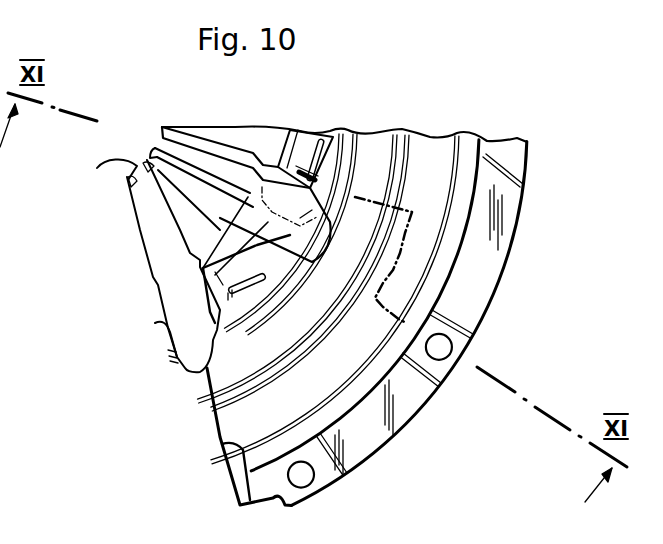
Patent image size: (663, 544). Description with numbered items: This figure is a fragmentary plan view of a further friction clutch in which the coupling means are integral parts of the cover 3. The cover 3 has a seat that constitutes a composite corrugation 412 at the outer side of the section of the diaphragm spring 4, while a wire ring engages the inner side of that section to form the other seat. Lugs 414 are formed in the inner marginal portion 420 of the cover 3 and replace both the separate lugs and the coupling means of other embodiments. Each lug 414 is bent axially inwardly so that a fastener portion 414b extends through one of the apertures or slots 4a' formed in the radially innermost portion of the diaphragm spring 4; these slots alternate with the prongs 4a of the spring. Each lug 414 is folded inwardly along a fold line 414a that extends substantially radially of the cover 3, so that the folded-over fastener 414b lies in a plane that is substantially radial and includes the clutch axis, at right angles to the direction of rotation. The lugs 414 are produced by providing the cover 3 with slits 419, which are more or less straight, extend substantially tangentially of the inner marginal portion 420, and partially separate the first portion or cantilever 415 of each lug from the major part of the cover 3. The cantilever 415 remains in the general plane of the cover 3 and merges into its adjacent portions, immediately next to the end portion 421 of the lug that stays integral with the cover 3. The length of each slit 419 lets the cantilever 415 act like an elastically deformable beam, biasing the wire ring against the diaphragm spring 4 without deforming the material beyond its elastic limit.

The cover 3 is at (392, 298).
The diaphragm spring 4 is at (207, 133).
The prongs 4a is at (147, 265).
The apertures or slots 4a' is at (210, 153).
The lugs 414 is at (283, 167).
The fold line 414a is at (313, 157).
The fastener portion 414b is at (300, 220).
The cantilever portion 415 is at (247, 267).
The slit 419 is at (267, 285).
The inner marginal portion 420 is at (250, 217).
The end portion 421 is at (300, 140).
The composite corrugation 412 is at (229, 322).